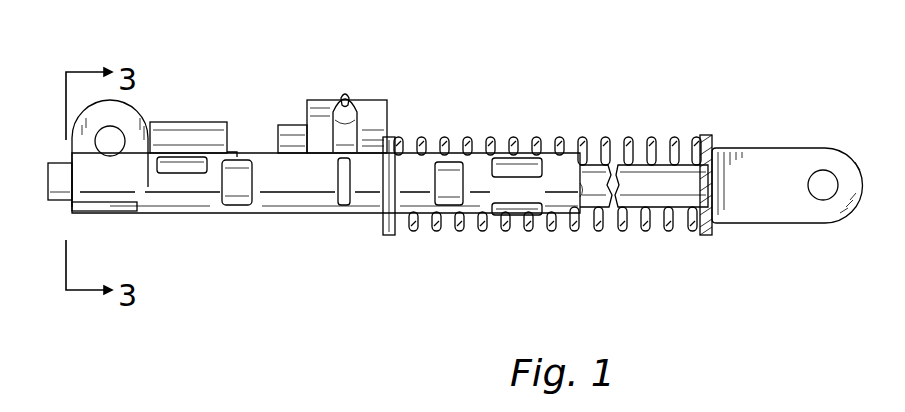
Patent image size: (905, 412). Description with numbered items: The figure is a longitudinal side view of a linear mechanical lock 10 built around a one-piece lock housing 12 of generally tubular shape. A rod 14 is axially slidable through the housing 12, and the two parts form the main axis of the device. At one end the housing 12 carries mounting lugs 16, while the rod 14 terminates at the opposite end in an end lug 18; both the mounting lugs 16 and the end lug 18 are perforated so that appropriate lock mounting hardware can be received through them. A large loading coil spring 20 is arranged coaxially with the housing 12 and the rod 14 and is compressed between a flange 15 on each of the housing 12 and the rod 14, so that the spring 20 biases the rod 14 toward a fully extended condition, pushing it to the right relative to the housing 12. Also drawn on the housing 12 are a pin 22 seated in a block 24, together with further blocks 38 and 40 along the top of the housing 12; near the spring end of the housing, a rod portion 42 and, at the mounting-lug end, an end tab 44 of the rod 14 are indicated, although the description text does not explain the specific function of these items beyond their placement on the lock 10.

The linear mechanical lock 10 is at (479, 104).
The lock housing 12 is at (293, 218).
The rod 14 is at (595, 152).
The flange 15 is at (390, 237).
The mounting lugs 16 is at (132, 112).
The end lug 18 is at (783, 162).
The loading coil spring 20 is at (668, 230).
The cotter pin 22 is at (330, 100).
The block 24 is at (377, 100).
The block 38 is at (197, 124).
The block 40 is at (288, 125).
The rod end portion 42 is at (592, 194).
The rod end tab 44 is at (72, 172).